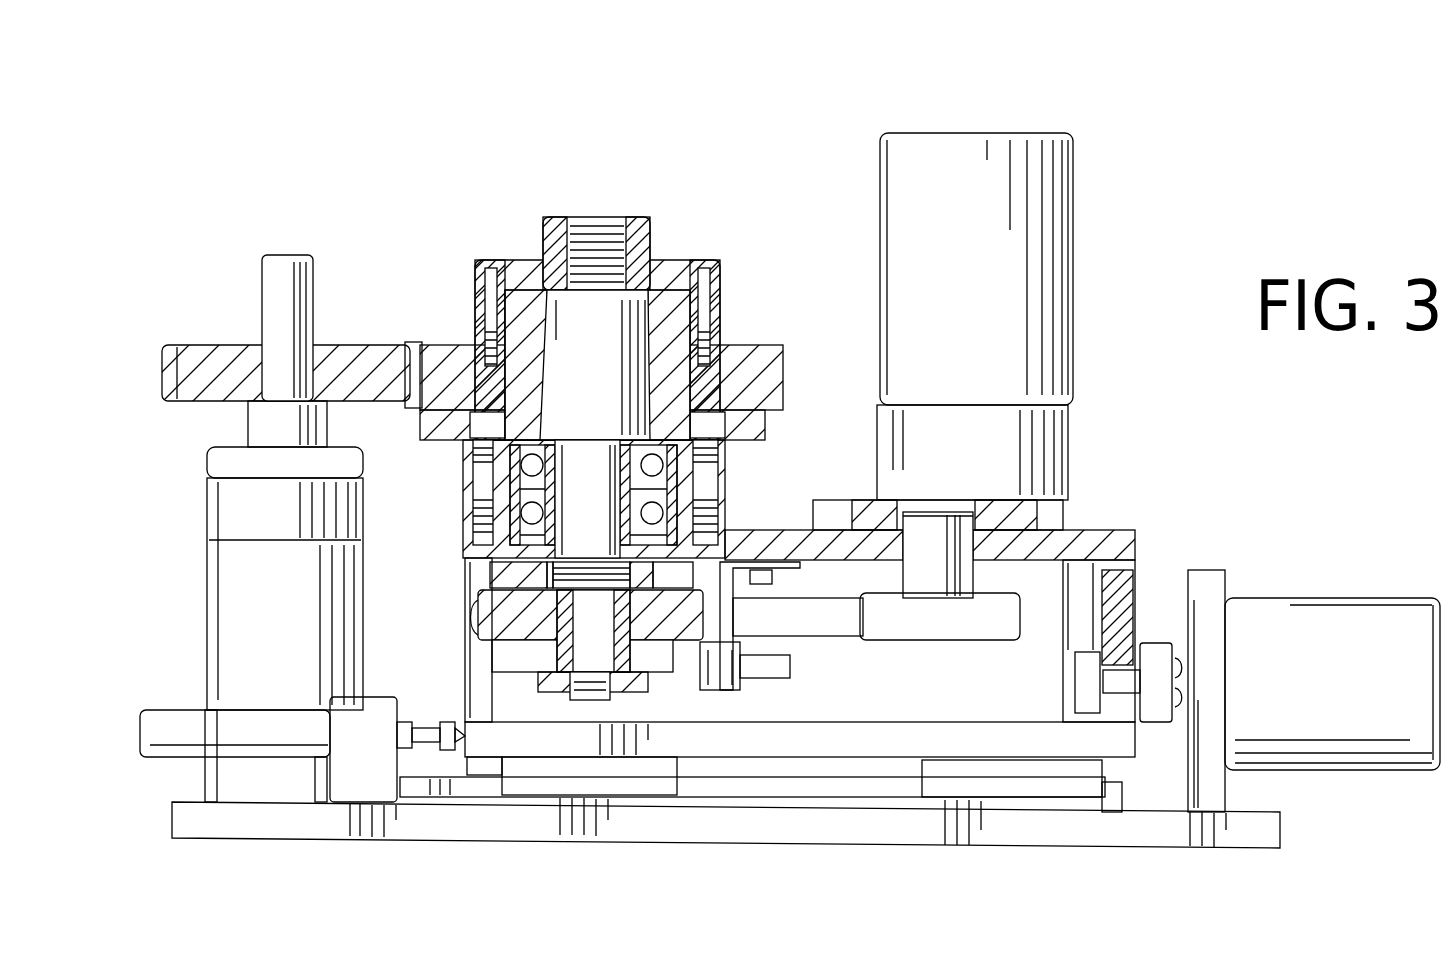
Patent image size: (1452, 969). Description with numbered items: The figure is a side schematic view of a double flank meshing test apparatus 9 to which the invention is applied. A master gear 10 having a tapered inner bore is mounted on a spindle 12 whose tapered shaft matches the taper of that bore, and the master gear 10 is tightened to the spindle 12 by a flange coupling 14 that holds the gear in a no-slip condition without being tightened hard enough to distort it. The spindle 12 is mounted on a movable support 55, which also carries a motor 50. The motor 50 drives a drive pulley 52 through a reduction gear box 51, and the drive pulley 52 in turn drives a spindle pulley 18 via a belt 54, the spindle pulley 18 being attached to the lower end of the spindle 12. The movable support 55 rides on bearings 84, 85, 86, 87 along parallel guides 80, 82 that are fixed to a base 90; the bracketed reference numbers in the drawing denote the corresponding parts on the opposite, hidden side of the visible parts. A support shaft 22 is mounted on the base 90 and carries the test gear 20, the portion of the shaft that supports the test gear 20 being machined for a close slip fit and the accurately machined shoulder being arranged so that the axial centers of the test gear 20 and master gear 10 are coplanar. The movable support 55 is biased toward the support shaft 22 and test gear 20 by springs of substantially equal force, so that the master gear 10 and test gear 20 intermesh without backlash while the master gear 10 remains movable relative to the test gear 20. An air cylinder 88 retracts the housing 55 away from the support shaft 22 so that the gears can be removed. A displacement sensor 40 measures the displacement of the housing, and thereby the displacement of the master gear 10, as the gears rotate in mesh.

The DFM test apparatus 9 is at (1163, 118).
The master gear 10 is at (677, 262).
The spindle 12 is at (598, 392).
The flange coupling 14 is at (480, 278).
The spindle pulley 18 is at (503, 642).
The test gear 20 is at (198, 356).
The support shaft 22 is at (300, 298).
The displacement sensor 40 is at (176, 724).
The motor 50 is at (1062, 260).
The reduction gear box 51 is at (884, 468).
The drive pulley 52 is at (932, 640).
The belt 54 is at (472, 615).
The movable support 55 is at (840, 742).
The parallel guide 80 is at (752, 833).
The parallel guide 82 is at (803, 797).
The bearing 84 is at (1027, 824).
The bearing 85 is at (596, 823).
The bearing 86 is at (1033, 790).
The bearing 87 is at (630, 790).
The air cylinder 88 is at (1347, 602).
The base 90 is at (488, 825).